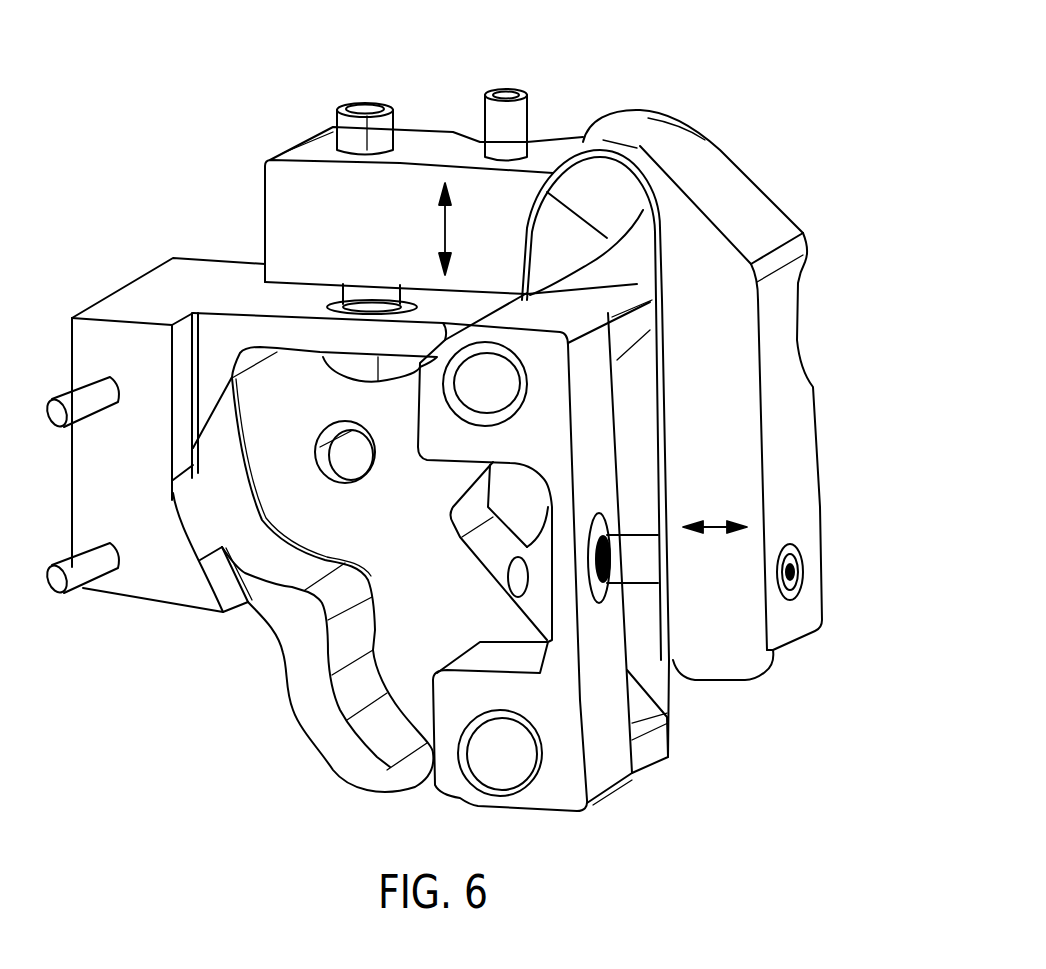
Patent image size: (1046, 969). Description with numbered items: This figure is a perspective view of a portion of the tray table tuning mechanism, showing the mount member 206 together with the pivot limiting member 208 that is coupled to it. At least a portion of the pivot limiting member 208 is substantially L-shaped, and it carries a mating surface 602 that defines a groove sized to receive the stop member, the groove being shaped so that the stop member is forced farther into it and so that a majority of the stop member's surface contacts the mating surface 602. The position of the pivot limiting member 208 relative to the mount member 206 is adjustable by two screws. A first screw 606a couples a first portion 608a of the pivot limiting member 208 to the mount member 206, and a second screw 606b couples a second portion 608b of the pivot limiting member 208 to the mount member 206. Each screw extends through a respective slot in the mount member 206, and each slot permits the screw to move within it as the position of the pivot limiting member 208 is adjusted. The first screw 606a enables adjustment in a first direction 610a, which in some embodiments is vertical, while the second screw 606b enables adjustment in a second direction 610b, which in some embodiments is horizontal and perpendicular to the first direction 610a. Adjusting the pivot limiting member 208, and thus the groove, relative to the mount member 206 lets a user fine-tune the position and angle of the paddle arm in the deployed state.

The mount member 206 is at (152, 297).
The pivot limiting member 208 is at (745, 306).
The mating surface 602 is at (625, 187).
The first screw 606a is at (348, 127).
The second screw 606b is at (635, 570).
The first portion 608a is at (287, 197).
The second portion 608b is at (727, 660).
The first direction 610a is at (445, 218).
The second direction 610b is at (717, 523).